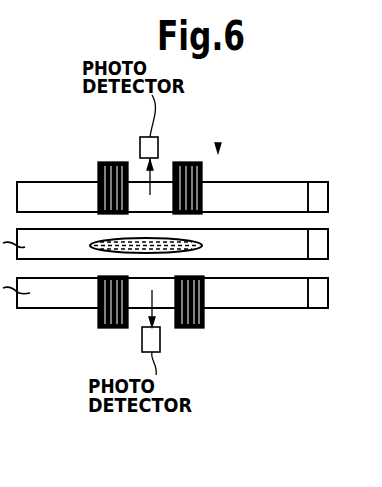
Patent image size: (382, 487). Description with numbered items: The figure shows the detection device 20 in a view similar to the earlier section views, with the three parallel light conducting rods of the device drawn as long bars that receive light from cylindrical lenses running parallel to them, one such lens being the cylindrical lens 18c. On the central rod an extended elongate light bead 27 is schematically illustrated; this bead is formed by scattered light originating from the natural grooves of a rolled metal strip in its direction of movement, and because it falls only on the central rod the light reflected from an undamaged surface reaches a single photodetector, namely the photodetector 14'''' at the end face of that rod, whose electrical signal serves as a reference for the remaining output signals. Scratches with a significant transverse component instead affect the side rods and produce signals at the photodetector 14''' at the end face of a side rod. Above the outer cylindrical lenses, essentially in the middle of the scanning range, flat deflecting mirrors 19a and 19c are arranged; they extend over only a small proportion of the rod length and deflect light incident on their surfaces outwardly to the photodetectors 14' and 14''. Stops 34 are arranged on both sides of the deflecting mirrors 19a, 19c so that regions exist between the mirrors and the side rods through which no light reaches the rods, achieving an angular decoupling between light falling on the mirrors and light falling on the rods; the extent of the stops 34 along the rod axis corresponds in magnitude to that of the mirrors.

The photodetector 14' is at (179, 344).
The photodetector 14'' is at (165, 130).
The photodetector 14''' is at (283, 242).
The photodetector 14'''' is at (313, 169).
The cylindrical lens 18c is at (62, 190).
The deflecting mirror 19a is at (141, 302).
The deflecting mirror 19c is at (133, 190).
The detection device 20 is at (219, 146).
The light bead 27 is at (203, 243).
The stop 34 is at (110, 163).